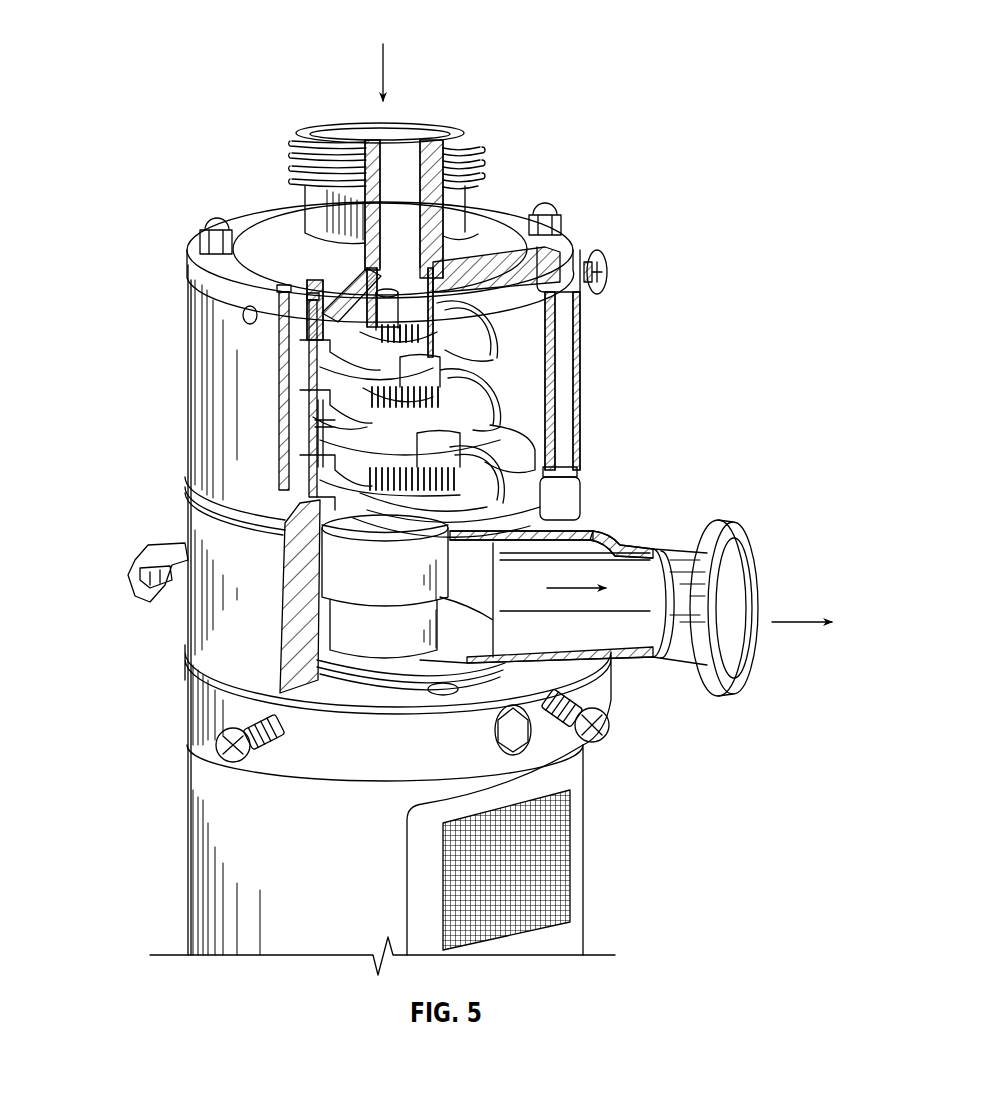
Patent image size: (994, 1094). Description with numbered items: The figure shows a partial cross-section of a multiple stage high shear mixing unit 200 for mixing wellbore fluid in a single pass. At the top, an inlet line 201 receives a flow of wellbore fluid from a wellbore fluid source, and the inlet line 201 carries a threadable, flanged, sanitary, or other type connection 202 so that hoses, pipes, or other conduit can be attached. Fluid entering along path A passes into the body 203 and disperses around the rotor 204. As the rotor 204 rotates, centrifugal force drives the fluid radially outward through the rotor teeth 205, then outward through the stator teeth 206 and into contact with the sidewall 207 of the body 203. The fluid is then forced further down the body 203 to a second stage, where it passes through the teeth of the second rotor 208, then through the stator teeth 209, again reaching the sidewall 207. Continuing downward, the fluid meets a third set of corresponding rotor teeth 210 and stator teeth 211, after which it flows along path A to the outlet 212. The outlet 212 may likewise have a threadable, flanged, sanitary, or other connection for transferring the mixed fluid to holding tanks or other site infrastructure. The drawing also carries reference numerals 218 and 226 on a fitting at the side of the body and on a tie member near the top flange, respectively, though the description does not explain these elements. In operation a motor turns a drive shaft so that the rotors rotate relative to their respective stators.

The mixing unit 200 is at (674, 87).
The inlet line 201 is at (357, 119).
The connection 202 is at (486, 161).
The body 203 is at (186, 700).
The rotor 204 is at (440, 330).
The rotor teeth 205 is at (475, 479).
The stator teeth 206 is at (437, 333).
The sidewall 207 is at (470, 398).
The second rotor 208 is at (445, 378).
The stator teeth 209 is at (470, 440).
The rotor teeth 210 is at (455, 461).
The stator teeth 211 is at (583, 507).
The outlet 212 is at (748, 557).
The cable clip 218 is at (131, 586).
The tie rod 226 is at (560, 241).